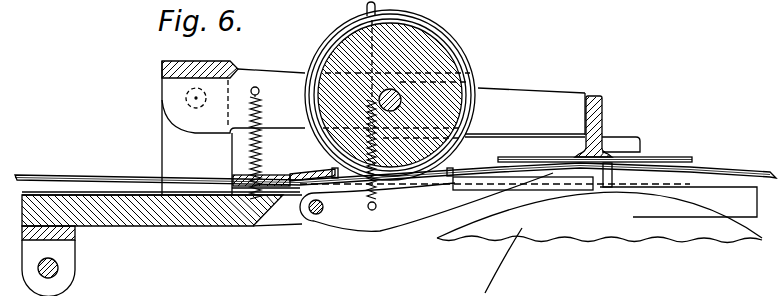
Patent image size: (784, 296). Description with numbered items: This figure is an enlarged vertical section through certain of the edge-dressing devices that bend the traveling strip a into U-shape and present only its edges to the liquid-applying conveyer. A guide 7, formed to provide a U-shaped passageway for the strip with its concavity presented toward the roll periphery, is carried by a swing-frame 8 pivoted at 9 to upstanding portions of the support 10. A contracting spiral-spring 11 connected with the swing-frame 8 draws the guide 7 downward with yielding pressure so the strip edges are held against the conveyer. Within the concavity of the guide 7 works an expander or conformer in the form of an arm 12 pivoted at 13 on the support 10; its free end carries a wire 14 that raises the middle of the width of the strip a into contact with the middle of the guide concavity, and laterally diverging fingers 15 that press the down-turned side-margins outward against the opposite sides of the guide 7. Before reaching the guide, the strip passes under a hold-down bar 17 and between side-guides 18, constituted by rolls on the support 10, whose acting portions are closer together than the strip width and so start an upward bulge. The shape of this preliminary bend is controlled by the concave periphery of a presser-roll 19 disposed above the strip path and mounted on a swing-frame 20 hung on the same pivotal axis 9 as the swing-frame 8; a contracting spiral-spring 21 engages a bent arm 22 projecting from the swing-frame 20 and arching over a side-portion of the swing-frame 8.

The guide 7 is at (660, 158).
The swing-frame 8 is at (520, 88).
The pivot 9 is at (190, 98).
The support 10 is at (143, 222).
The contracting spiral-spring 11 is at (250, 157).
The arm 12 is at (425, 220).
The pivot 13 is at (316, 214).
The wire 14 is at (606, 182).
The laterally diverging fingers 15 is at (583, 181).
The hold-down bar 17 is at (233, 177).
The side-guides 18 is at (330, 169).
The presser-roll 19 is at (435, 50).
The swing-frame 20 is at (206, 117).
The contracting spiral-spring 21 is at (367, 188).
The bent arm 22 is at (365, 10).
The strip a is at (100, 176).